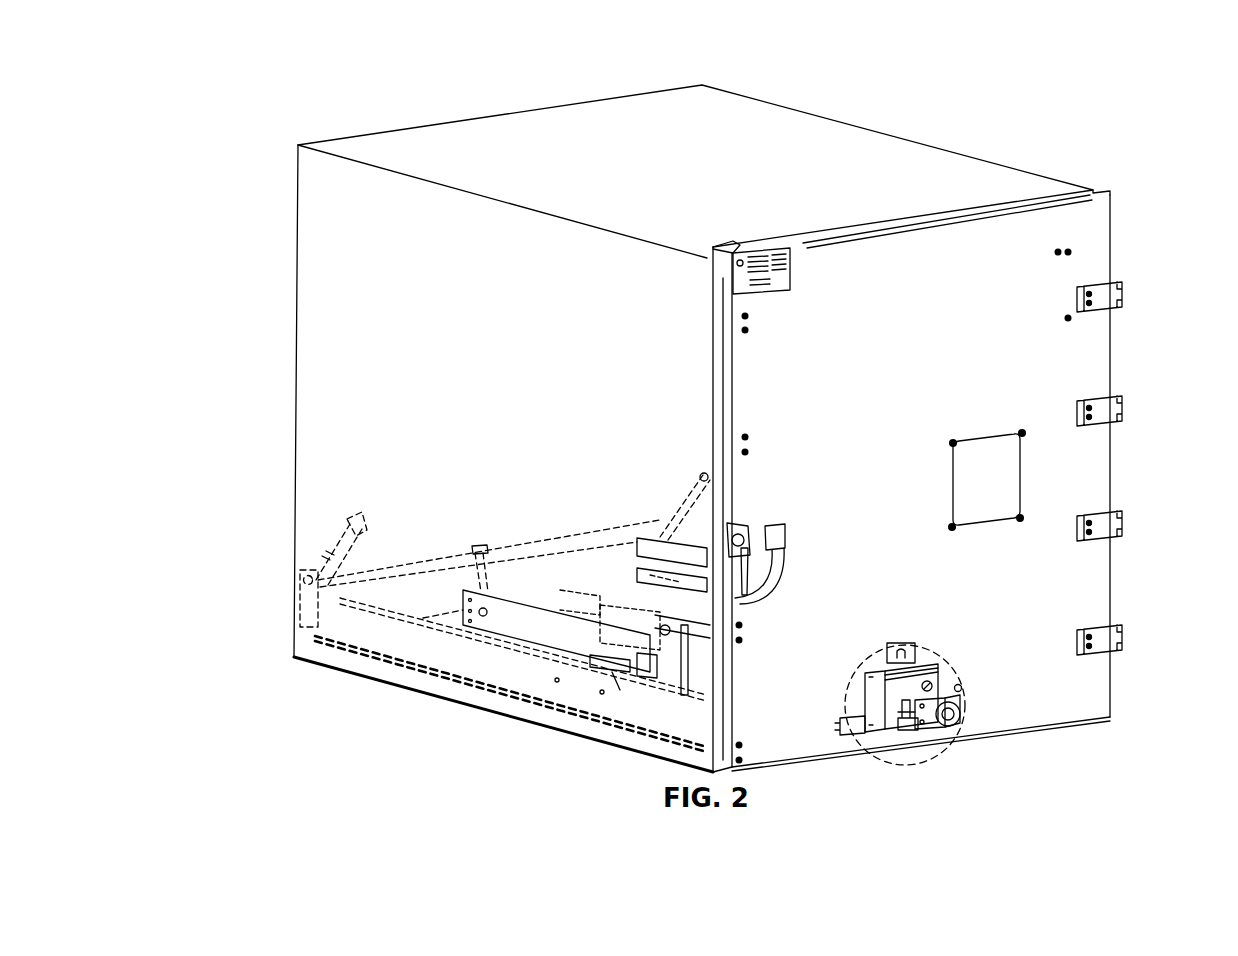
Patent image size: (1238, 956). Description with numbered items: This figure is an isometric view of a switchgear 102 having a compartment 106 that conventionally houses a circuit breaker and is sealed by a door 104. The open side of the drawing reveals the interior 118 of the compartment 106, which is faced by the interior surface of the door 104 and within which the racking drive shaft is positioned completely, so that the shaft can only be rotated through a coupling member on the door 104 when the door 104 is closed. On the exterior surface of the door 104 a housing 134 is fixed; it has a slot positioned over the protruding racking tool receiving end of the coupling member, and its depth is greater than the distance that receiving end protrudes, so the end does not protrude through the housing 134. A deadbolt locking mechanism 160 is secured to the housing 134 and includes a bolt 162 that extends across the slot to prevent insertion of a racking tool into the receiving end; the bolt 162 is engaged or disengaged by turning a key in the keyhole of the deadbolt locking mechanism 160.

The switchgear 102 is at (1002, 115).
The door 104 is at (945, 340).
The compartment 106 is at (440, 135).
The interior 118 is at (341, 345).
The housing 134 is at (918, 666).
The deadbolt locking mechanism 160 is at (968, 702).
The bolt 162 is at (955, 715).